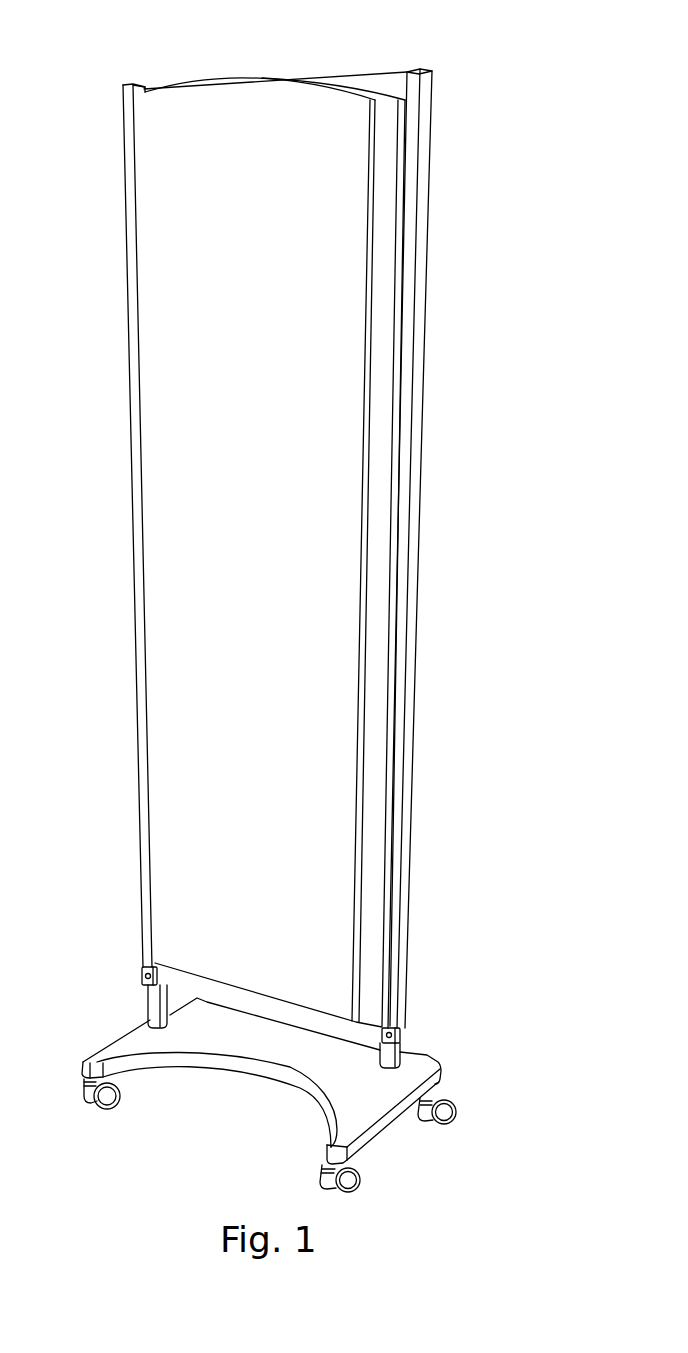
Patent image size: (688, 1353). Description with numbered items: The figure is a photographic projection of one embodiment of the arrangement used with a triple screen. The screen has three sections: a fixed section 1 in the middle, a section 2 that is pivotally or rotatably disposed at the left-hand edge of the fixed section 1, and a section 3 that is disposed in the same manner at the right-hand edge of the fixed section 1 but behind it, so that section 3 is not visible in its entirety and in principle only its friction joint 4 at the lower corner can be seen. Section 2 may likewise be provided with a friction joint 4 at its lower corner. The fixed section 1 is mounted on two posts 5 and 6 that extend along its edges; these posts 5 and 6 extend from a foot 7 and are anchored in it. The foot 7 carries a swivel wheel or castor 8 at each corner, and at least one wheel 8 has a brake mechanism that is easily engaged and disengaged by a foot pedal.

The fixed section 1 is at (390, 81).
The section 2 is at (201, 593).
The section 3 is at (383, 299).
The friction joint 4 is at (142, 978).
The post 5 is at (152, 1006).
The post 6 is at (420, 1058).
The foot 7 is at (395, 1138).
The swivel wheel 8 is at (110, 1097).